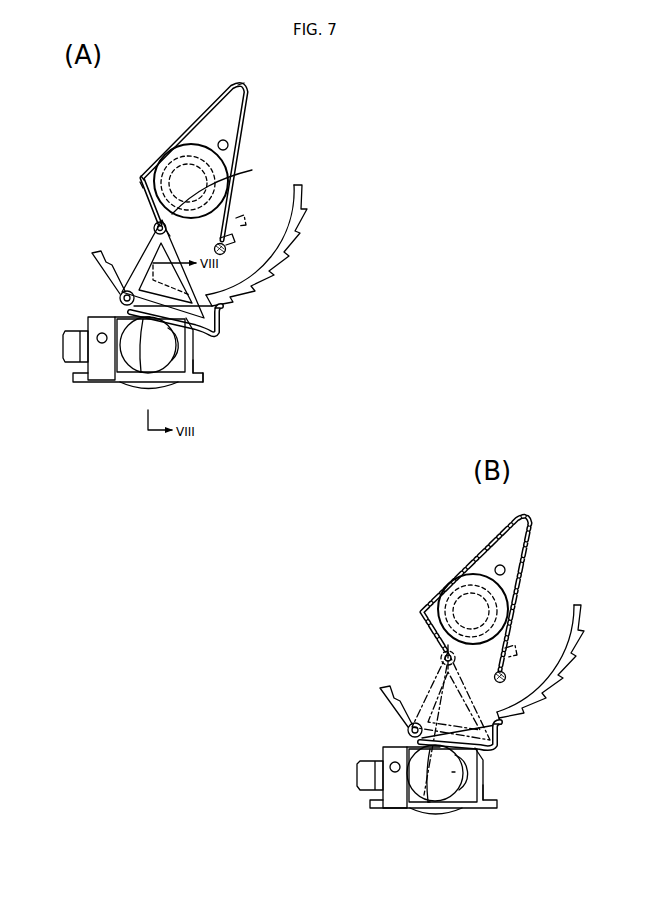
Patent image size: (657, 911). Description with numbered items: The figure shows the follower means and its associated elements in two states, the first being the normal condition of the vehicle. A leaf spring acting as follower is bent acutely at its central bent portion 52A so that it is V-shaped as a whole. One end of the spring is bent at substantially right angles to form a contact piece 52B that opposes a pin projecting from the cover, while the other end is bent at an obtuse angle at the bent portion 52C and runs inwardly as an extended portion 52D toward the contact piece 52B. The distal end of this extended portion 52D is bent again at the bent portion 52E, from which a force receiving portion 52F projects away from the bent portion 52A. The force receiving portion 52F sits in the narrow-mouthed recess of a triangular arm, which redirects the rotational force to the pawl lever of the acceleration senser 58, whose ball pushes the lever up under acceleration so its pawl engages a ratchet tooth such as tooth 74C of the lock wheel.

The bent portion 52A is at (241, 82).
The contact piece 52B is at (235, 241).
The bent portion 52C is at (143, 176).
The extended portion 52D is at (140, 190).
The bent portion 52E is at (226, 189).
The force receiving portion 52F is at (168, 232).
The acceleration senser 58 is at (209, 360).
The ratchet tooth 74C is at (454, 774).